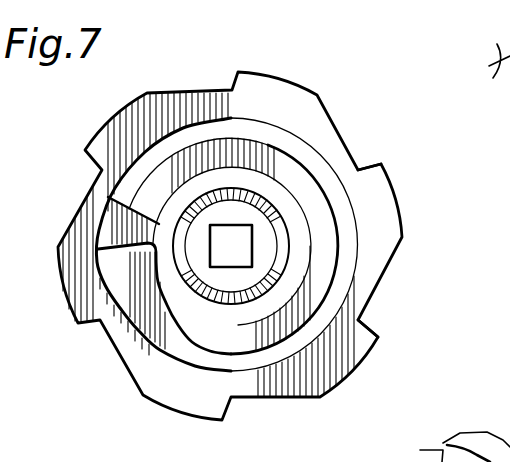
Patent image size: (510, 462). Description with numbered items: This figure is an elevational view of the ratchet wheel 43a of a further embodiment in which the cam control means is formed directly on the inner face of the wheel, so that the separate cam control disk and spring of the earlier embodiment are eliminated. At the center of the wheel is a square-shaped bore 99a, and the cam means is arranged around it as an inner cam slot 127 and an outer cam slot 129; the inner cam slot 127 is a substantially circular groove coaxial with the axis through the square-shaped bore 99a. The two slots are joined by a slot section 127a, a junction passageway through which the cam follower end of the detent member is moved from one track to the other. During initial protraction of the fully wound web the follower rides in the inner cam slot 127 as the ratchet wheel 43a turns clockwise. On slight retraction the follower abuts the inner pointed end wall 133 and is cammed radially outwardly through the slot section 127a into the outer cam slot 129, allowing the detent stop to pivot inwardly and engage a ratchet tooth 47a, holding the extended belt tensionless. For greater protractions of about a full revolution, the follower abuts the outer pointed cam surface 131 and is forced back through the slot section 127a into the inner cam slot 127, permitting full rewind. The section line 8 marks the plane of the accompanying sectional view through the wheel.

The section line 8- 8 is at (278, 442).
The inner cam slot 127 is at (245, 178).
The slot section 127a is at (130, 212).
The outer cam slot 129 is at (347, 284).
The outer pointed cam surface 131 is at (110, 247).
The inner pointed end wall 133 is at (148, 241).
The square-shaped bore 99a is at (224, 258).
The ratchet wheel 43a is at (390, 164).
The ratchet tooth 47a is at (380, 337).